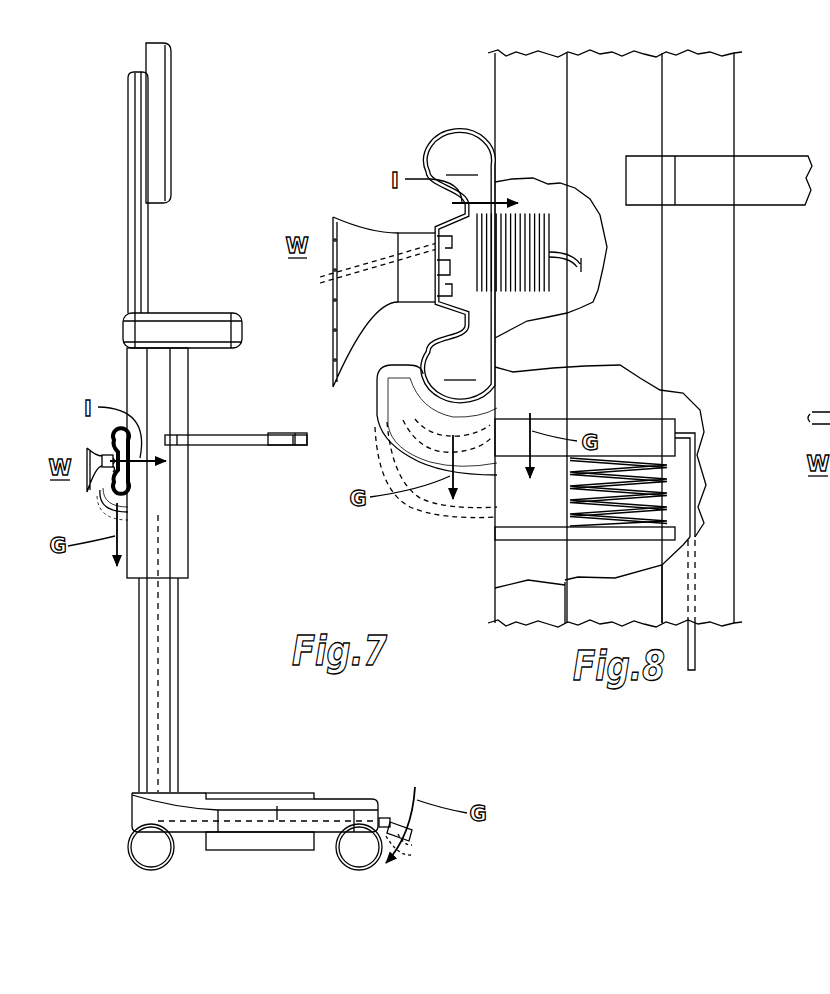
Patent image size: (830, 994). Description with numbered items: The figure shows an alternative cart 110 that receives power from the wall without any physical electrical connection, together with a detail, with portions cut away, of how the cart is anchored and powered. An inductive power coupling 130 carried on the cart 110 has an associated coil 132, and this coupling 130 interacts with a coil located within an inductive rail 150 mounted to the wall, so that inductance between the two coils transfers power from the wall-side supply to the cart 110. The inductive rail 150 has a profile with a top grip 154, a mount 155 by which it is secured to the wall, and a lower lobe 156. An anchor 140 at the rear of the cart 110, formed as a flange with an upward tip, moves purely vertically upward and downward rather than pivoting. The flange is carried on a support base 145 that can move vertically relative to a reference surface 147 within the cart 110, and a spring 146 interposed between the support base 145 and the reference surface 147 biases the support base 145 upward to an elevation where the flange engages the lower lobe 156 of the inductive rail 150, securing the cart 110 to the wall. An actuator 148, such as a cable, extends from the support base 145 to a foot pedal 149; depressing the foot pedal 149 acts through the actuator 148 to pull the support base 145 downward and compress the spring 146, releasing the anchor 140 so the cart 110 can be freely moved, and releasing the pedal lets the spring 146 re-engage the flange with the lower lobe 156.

In FIG. 7, the alternative cart 110 is at (205, 256).
In FIG. 8, the alternative cart 110 is at (725, 98).
In FIG. 7, the inductive power coupling 130 is at (134, 470).
In FIG. 8, the inductive power coupling 130 is at (530, 206).
In FIG. 8, the coil 132 is at (533, 277).
In FIG. 7, the anchor 140 is at (102, 500).
In FIG. 8, the anchor 140 is at (373, 401).
In FIG. 8, the support base 145 is at (670, 427).
In FIG. 8, the spring 146 is at (653, 488).
In FIG. 8, the reference surface 147 is at (672, 532).
In FIG. 7, the actuator 148 is at (277, 806).
In FIG. 8, the actuator 148 is at (697, 658).
In FIG. 7, the foot pedal 149 is at (413, 833).
In FIG. 7, the inductive rail 150 is at (77, 441).
In FIG. 8, the inductive rail 150 is at (406, 263).
In FIG. 8, the top grip 154 is at (462, 164).
In FIG. 8, the mount 155 is at (347, 308).
In FIG. 8, the lower lobe 156 is at (460, 369).